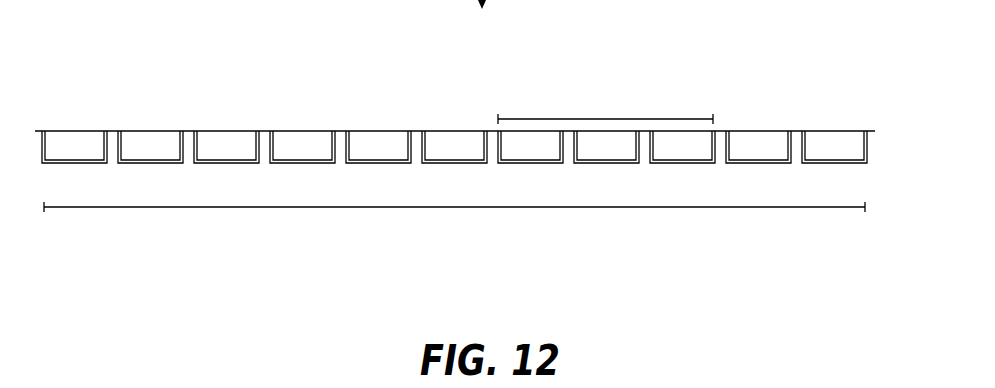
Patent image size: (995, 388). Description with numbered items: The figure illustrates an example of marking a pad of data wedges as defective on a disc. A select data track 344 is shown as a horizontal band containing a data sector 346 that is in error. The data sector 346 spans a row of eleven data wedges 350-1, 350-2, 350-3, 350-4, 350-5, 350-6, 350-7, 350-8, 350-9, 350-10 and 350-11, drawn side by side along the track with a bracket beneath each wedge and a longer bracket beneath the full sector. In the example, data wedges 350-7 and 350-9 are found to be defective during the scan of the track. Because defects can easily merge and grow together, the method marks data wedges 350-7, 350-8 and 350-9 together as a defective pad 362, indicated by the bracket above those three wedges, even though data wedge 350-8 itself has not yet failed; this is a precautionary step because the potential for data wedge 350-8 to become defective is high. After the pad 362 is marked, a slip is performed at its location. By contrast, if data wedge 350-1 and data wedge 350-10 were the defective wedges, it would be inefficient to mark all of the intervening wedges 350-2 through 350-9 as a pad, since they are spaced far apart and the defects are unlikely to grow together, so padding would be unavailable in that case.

The select data track 344 is at (160, 70).
The data sector 346 is at (288, 208).
The defective pad 362 is at (592, 119).
The data wedge 350-1 is at (107, 176).
The data wedge 350-2 is at (183, 176).
The data wedge 350-3 is at (259, 176).
The data wedge 350-4 is at (335, 176).
The data wedge 350-5 is at (411, 176).
The data wedge 350-6 is at (487, 176).
The data wedge 350-7 is at (563, 176).
The data wedge 350-8 is at (639, 176).
The data wedge 350-9 is at (715, 176).
The data wedge 350-10 is at (791, 176).
The data wedge 350-11 is at (867, 176).